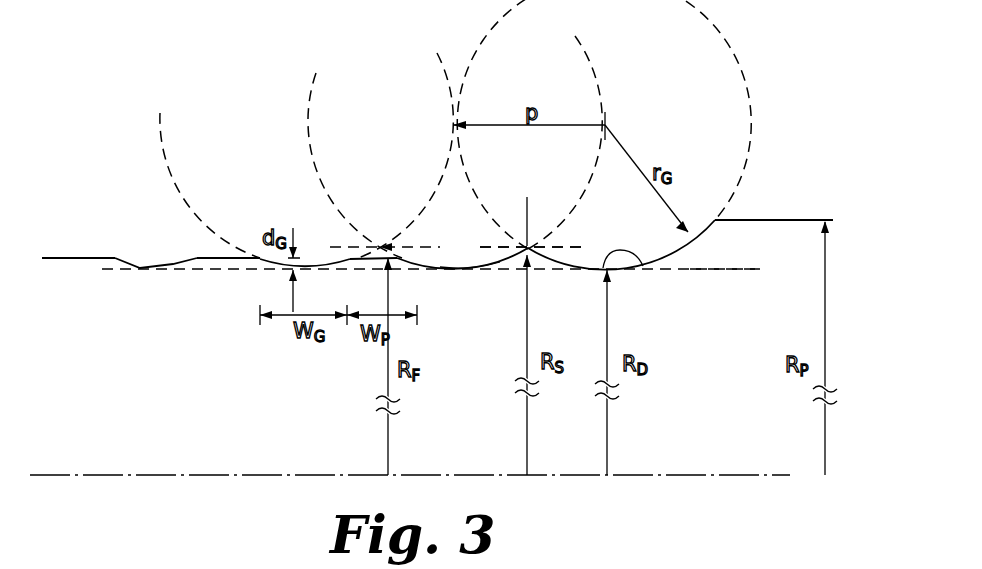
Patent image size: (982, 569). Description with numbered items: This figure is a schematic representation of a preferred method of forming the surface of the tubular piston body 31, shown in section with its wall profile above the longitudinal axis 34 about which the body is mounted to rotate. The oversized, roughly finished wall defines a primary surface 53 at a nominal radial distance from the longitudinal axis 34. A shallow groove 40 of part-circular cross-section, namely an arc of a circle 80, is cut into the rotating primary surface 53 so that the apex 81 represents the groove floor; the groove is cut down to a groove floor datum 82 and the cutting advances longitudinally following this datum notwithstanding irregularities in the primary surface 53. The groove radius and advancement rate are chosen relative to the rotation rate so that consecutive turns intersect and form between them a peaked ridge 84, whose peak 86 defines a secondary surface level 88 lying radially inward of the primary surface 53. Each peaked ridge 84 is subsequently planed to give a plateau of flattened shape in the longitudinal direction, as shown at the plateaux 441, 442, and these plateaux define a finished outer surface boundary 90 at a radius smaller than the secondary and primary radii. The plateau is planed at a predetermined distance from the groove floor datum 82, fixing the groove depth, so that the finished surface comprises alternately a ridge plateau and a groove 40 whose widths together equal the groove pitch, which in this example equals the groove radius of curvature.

The circle 80 is at (752, 88).
The peak 86 is at (528, 208).
The secondary surface level 88 is at (580, 236).
The primary surface 53 is at (798, 220).
The tubular piston body 31 is at (812, 273).
The groove floor datum 82 is at (718, 272).
The apex 81 is at (643, 262).
The peaked ridge 84 is at (517, 265).
The shallow groove 40 is at (163, 260).
The plateau 441 is at (367, 258).
The plateau 442 is at (202, 258).
The finished outer surface boundary 90 is at (62, 258).
The longitudinal axis 34 is at (707, 475).